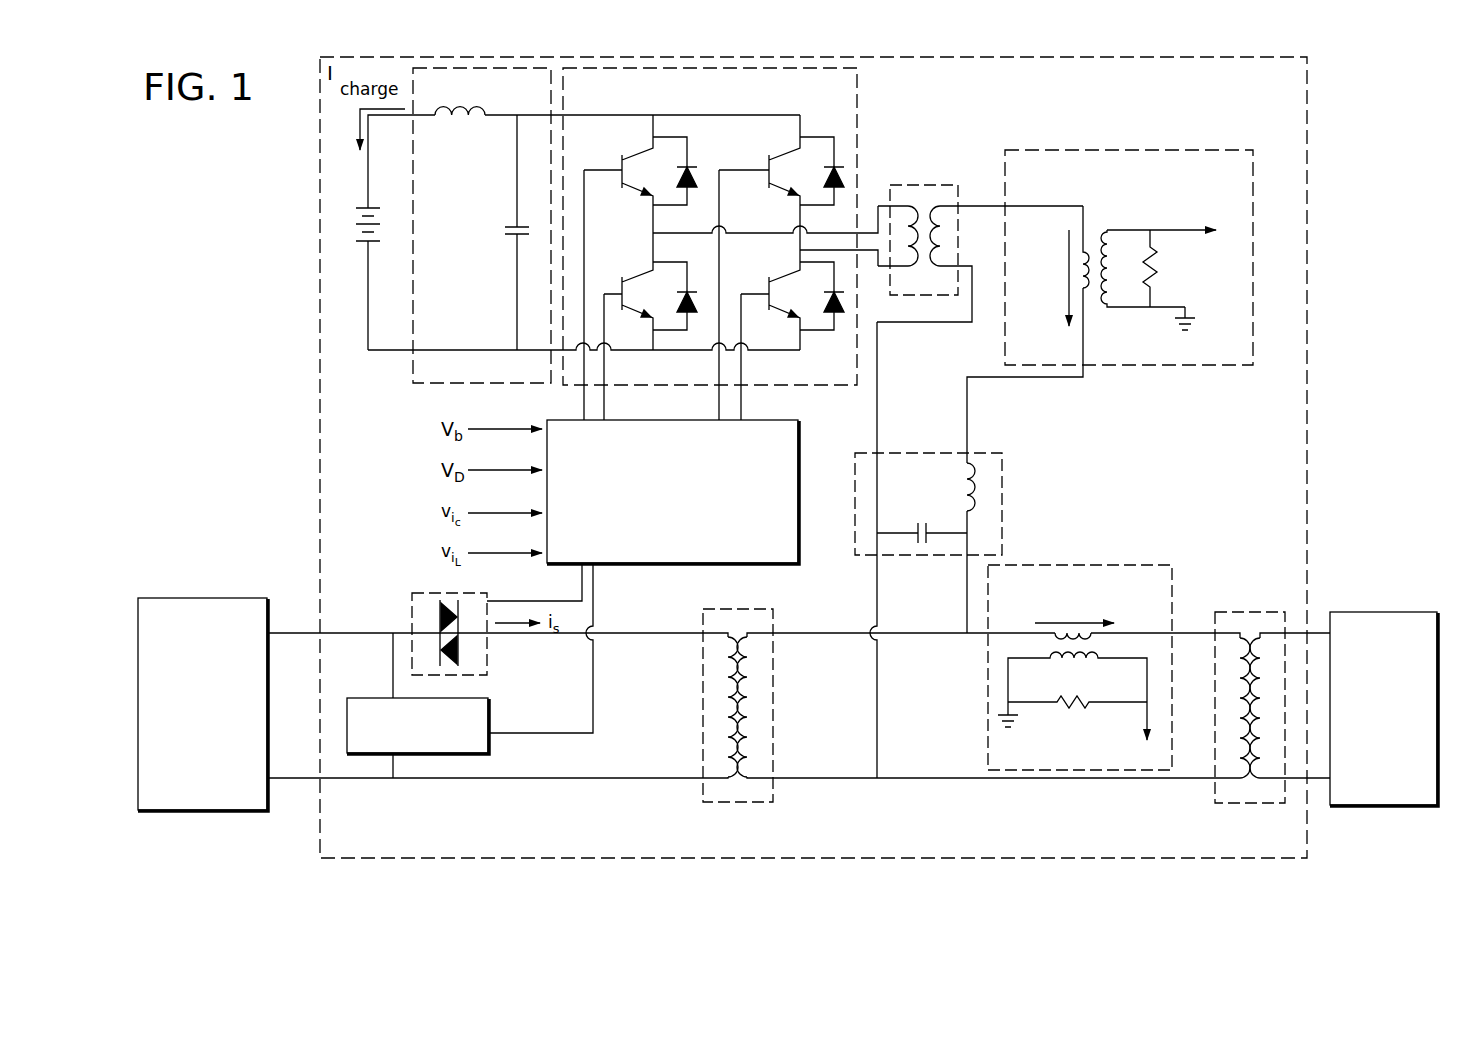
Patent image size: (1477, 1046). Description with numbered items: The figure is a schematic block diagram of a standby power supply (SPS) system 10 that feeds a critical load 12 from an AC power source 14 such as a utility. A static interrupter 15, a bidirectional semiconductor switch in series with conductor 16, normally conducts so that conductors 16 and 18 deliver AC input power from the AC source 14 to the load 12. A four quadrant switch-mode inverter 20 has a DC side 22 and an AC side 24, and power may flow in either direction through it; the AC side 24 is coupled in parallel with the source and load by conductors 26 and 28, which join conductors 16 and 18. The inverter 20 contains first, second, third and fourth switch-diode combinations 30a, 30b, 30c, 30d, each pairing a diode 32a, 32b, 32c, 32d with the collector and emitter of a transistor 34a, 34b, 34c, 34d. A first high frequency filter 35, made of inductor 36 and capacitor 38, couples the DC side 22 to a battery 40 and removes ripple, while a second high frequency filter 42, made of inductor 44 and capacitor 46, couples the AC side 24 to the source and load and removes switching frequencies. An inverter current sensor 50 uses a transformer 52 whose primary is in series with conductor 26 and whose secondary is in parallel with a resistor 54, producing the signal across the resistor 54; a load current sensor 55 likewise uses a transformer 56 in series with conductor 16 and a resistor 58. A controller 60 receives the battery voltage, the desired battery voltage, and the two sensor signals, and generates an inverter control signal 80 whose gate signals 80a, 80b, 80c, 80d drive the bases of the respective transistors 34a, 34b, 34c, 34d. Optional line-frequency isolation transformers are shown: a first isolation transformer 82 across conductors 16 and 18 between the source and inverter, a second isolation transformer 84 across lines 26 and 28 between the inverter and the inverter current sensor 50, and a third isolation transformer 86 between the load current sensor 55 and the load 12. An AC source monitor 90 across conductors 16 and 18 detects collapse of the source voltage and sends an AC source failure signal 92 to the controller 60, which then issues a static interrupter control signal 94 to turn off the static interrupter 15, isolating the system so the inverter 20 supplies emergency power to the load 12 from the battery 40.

The standby power supply (SPS) system 10 is at (365, 870).
The critical load 12 is at (1371, 789).
The AC power source 14 is at (204, 719).
The static interrupter 15 is at (470, 650).
The conductor 16 is at (627, 636).
The conductor 18 is at (638, 776).
The four quadrant switch-mode inverter 20 is at (797, 373).
The DC side 22 is at (556, 103).
The AC side 24 is at (882, 133).
The conductor 26 is at (968, 410).
The conductor 28 is at (876, 428).
The first switch-diode combination 30a is at (672, 184).
The second switch-diode combination 30b is at (819, 307).
The third switch-diode combination 30c is at (819, 184).
The fourth switch-diode combination 30d is at (672, 307).
The diode 32a is at (694, 176).
The diode 32b is at (835, 331).
The diode 32c is at (842, 176).
The diode 32d is at (692, 287).
The transistor 34a is at (628, 150).
The transistor 34b is at (773, 272).
The transistor 34c is at (773, 148).
The transistor 34d is at (628, 272).
The first high frequency filter 35 is at (418, 379).
The inductor 36 is at (452, 128).
The capacitor 38 is at (510, 229).
The battery 40 is at (338, 260).
The second high frequency filter 42 is at (868, 541).
The inductor 44 is at (975, 493).
The capacitor 46 is at (916, 530).
The inverter current sensor 50 is at (1218, 358).
The transformer 52 is at (1102, 298).
The resistor 54 is at (1158, 266).
The load current sensor 55 is at (1170, 590).
The transformer 56 is at (1043, 651).
The resistor 58 is at (1078, 708).
The controller 60 is at (760, 559).
The inverter control signal 80 is at (498, 403).
The gate signal 80a is at (583, 400).
The gate signal 80b is at (743, 400).
The gate signal 80c is at (716, 412).
The gate signal 80d is at (606, 400).
The first isolation transformer 82 is at (727, 616).
The second isolation transformer 84 is at (920, 187).
The third isolation transformer 86 is at (1246, 612).
The AC source monitor 90 is at (480, 743).
The AC source failure signal 92 is at (575, 737).
The static interrupter control signal 94 is at (532, 600).